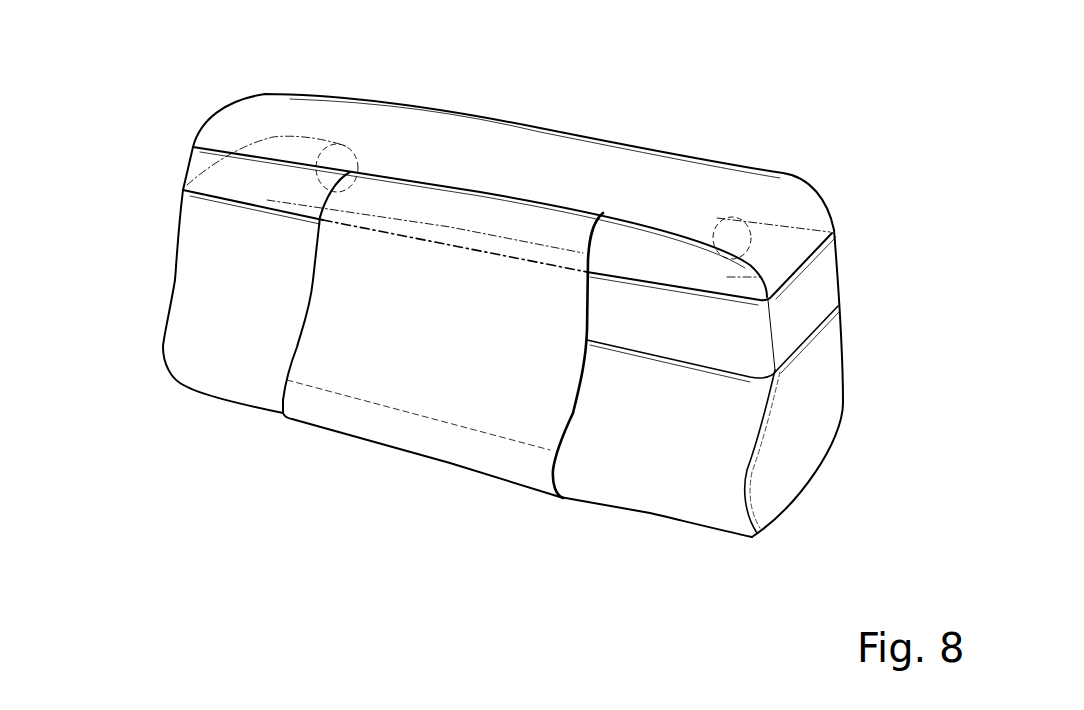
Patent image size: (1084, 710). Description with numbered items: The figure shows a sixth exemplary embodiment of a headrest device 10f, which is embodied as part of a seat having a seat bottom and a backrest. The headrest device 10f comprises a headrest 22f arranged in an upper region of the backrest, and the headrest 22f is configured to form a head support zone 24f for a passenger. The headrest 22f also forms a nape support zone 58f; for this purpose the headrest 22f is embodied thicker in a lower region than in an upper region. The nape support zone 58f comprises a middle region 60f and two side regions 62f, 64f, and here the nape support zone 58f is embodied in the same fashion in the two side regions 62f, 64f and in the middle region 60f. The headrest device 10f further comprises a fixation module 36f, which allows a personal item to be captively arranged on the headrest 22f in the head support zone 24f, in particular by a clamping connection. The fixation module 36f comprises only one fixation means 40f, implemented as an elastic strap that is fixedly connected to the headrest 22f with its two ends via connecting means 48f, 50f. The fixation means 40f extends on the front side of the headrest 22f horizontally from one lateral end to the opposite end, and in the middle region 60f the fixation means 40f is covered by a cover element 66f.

The headrest device 10f is at (128, 184).
The headrest 22f is at (522, 175).
The head support zone 24f is at (430, 360).
The fixation module 36f is at (788, 302).
The fixation means 40f is at (240, 228).
The connecting means 48f is at (738, 243).
The connecting means 50f is at (333, 167).
The nape support zone 58f is at (763, 498).
The middle region 60f is at (400, 475).
The side region 62f is at (630, 535).
The side region 64f is at (222, 425).
The cover element 66f is at (568, 237).